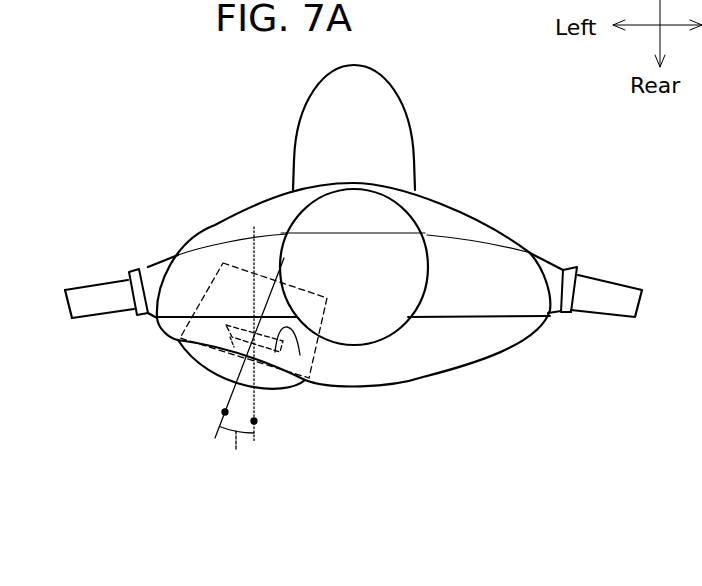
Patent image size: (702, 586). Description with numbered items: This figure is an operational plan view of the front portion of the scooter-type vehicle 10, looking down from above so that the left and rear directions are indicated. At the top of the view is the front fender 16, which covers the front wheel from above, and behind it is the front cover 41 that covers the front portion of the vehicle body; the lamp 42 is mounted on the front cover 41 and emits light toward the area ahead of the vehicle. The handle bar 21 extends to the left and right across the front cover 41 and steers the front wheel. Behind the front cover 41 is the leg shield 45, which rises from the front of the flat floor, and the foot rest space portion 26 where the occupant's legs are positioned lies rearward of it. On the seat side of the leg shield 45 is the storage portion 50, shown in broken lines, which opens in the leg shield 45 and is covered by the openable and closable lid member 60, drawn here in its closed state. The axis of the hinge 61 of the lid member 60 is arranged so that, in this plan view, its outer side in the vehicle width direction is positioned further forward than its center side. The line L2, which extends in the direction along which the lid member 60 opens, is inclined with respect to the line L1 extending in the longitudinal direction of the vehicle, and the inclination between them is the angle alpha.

The vehicle 10 is at (123, 92).
The front fender 16 is at (408, 117).
The handle bar 21 is at (612, 287).
The foot rest space portion 26 is at (368, 481).
The front cover 41 is at (268, 198).
The lamp 42 is at (410, 215).
The leg shield 45 is at (167, 333).
The storage portion 50 is at (206, 294).
The lid member 60 is at (193, 367).
The hinge 61 is at (299, 345).
The line L1 is at (257, 424).
The line L2 is at (221, 413).